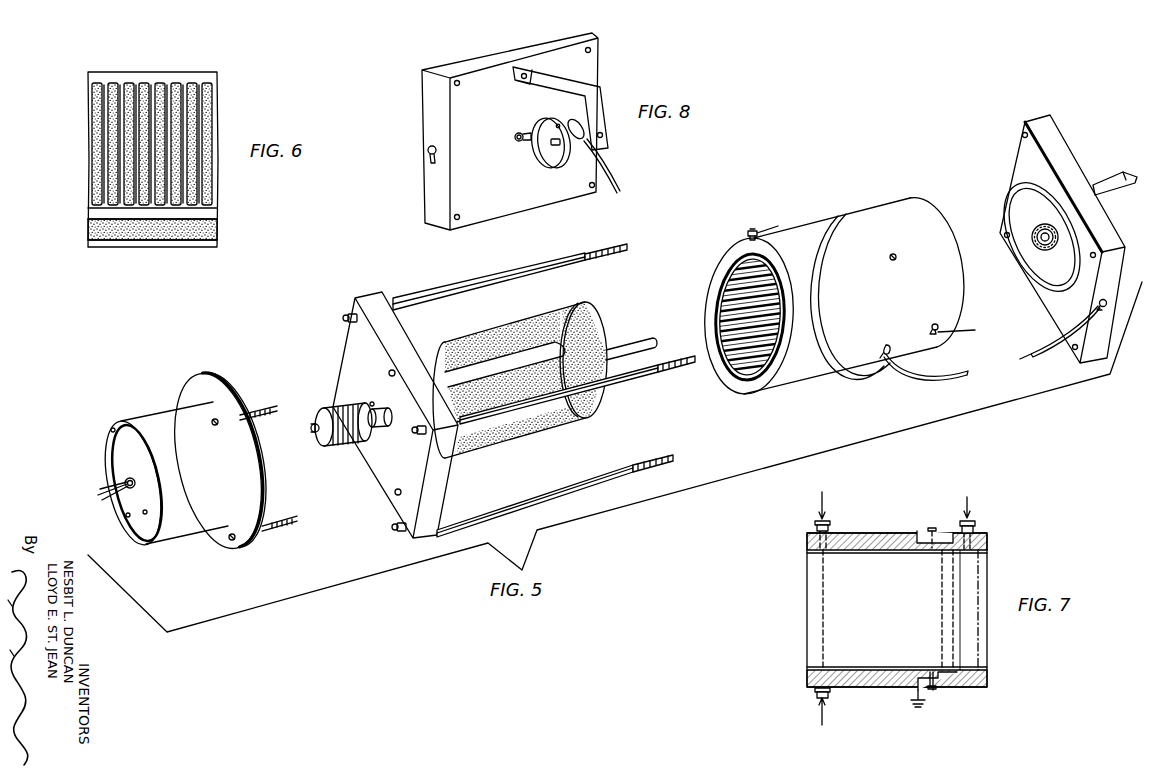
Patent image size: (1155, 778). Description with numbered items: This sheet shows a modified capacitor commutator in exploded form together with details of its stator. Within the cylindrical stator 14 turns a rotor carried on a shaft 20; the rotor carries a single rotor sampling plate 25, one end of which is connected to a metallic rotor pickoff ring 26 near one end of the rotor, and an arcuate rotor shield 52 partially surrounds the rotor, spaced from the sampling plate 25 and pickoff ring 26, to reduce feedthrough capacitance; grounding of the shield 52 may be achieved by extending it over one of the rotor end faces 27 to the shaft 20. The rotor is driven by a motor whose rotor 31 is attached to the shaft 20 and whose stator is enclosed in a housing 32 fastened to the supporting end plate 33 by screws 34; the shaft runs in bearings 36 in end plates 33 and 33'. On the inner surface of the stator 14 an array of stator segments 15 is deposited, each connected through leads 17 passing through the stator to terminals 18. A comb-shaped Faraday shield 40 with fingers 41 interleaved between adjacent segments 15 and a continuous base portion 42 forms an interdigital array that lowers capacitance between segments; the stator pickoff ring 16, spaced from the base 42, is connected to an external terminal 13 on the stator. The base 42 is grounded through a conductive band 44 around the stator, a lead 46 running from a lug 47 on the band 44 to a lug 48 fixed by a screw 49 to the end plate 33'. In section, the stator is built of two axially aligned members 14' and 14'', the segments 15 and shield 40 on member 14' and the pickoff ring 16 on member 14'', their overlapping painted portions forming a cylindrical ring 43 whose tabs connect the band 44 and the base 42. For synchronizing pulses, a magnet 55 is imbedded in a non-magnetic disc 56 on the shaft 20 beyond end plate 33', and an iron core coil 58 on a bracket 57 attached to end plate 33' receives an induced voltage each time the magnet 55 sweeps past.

In FIG. 5, the external terminal 13 is at (937, 324).
In FIG. 7, the external terminal 13 is at (973, 514).
In FIG. 5, the stator 14 is at (831, 297).
In FIG. 7, the stator 14 is at (897, 644).
In FIG. 7, the stator member 14' is at (897, 525).
In FIG. 7, the stator member 14'' is at (995, 588).
In FIG. 6, the stator segments 15 is at (203, 85).
In FIG. 5, the stator segments 15 is at (735, 323).
In FIG. 7, the stator segments 15 is at (899, 552).
In FIG. 6, the stator pickoff ring 16 is at (213, 239).
In FIG. 7, the stator pickoff ring 16 is at (968, 664).
In FIG. 5, the leads 17 is at (760, 241).
In FIG. 5, the terminals 18 is at (755, 231).
In FIG. 7, the terminals 18 is at (829, 527).
In FIG. 8, the shaft 20 is at (528, 130).
In FIG. 5, the shaft 20 is at (380, 427).
In FIG. 5, the rotor sampling plate 25 is at (525, 355).
In FIG. 5, the rotor pickoff ring 26 is at (594, 338).
In FIG. 5, the end face 27 is at (428, 364).
In FIG. 5, the motor rotor 31 is at (346, 442).
In FIG. 5, the housing 32 is at (190, 521).
In FIG. 5, the end plate 33 is at (395, 400).
In FIG. 5, the end plate 33' is at (1062, 239).
In FIG. 5, the screws 34 is at (237, 541).
In FIG. 8, the bearings 36 is at (516, 134).
In FIG. 5, the bearings 36 is at (1042, 229).
In FIG. 6, the Faraday shield 40 is at (92, 202).
In FIG. 6, the fingers 41 is at (135, 84).
In FIG. 5, the fingers 41 is at (735, 297).
In FIG. 6, the base portion 42 is at (210, 209).
In FIG. 7, the base portion 42 is at (947, 666).
In FIG. 7, the cylindrical ring 43 is at (942, 533).
In FIG. 5, the electrically conductive band 44 is at (857, 227).
In FIG. 7, the electrically conductive band 44 is at (918, 530).
In FIG. 5, the lead 46 is at (969, 373).
In FIG. 5, the lug 47 is at (893, 350).
In FIG. 5, the lug 48 is at (1093, 319).
In FIG. 8, the screw 49 is at (427, 152).
In FIG. 5, the screw 49 is at (1104, 298).
In FIG. 5, the rotor shield 52 is at (475, 332).
In FIG. 8, the magnet 55 is at (558, 123).
In FIG. 8, the non-magnetic disc 56 is at (552, 158).
In FIG. 8, the bracket 57 is at (582, 78).
In FIG. 8, the iron core coil 58 is at (576, 124).